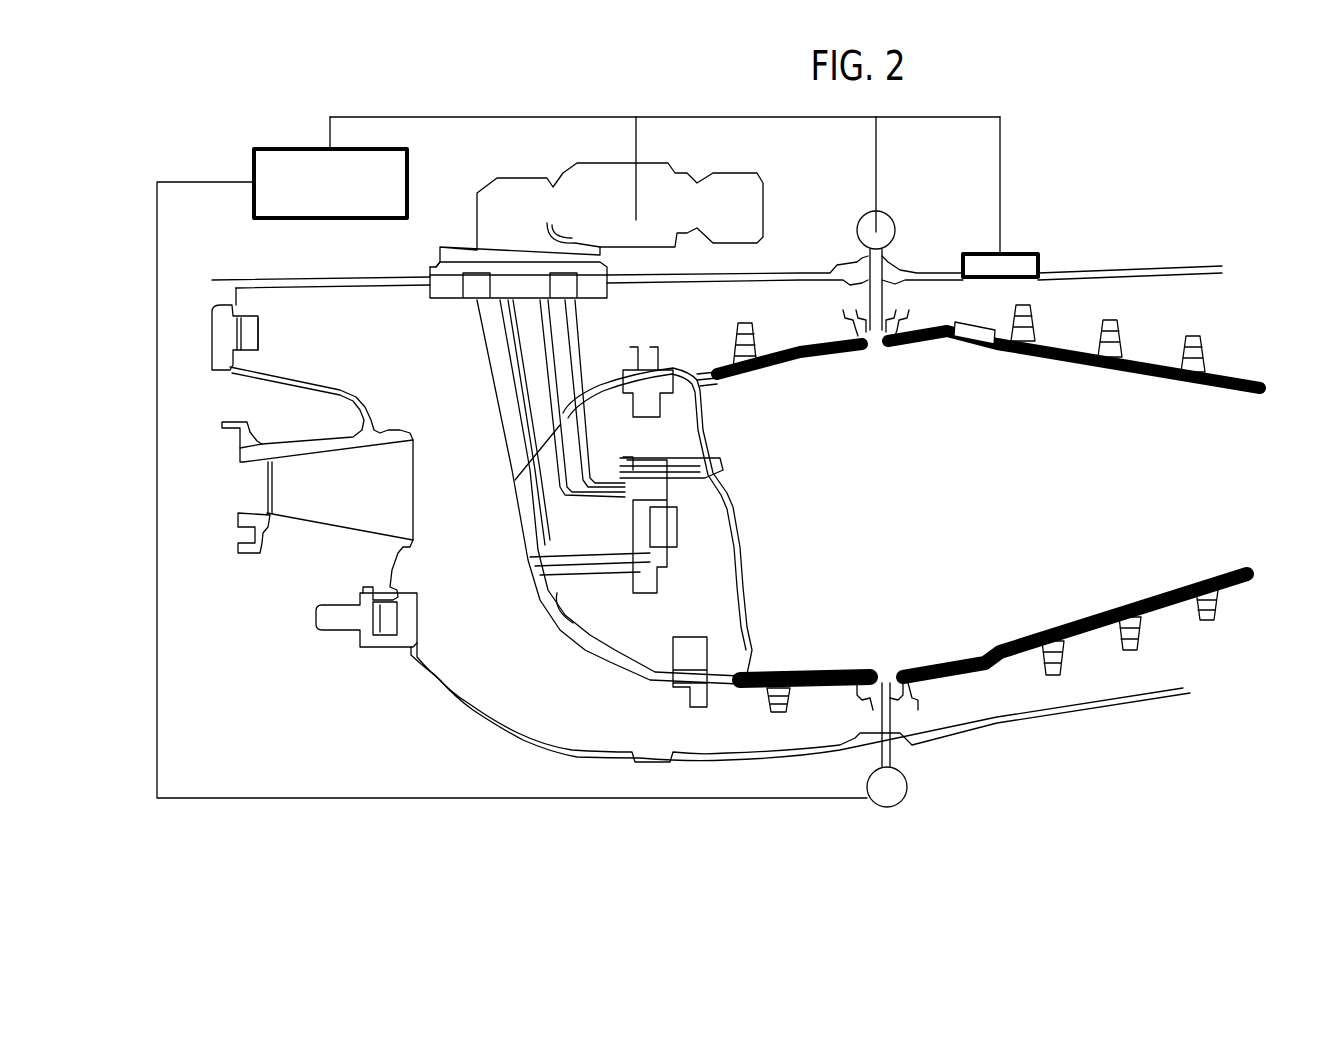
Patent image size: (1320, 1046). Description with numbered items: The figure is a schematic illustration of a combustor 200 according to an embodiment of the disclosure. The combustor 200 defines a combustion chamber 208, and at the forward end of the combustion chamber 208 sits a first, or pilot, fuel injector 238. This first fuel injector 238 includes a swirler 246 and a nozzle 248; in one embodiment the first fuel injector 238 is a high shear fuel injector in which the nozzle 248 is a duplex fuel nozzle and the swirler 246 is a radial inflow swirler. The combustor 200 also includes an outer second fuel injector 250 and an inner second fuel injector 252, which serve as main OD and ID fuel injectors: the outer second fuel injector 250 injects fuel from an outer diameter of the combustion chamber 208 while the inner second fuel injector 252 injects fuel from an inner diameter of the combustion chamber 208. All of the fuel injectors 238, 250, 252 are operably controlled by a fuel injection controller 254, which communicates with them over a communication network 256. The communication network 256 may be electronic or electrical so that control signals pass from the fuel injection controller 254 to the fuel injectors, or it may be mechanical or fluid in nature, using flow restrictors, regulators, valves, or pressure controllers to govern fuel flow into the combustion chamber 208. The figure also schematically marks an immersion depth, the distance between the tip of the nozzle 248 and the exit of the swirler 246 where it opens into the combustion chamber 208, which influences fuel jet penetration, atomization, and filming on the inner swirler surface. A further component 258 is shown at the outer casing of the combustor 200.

The combustor 200 is at (1117, 211).
The combustion chamber 208 is at (889, 508).
The first fuel injector 238 is at (750, 478).
The swirler 246 is at (707, 467).
The nozzle 248 is at (660, 523).
The outer second fuel injector 250 is at (857, 233).
The inner second fuel injector 252 is at (907, 795).
The fuel injection controller 254 is at (330, 183).
The communication network 256 is at (502, 115).
The third sensor 258 is at (1015, 253).